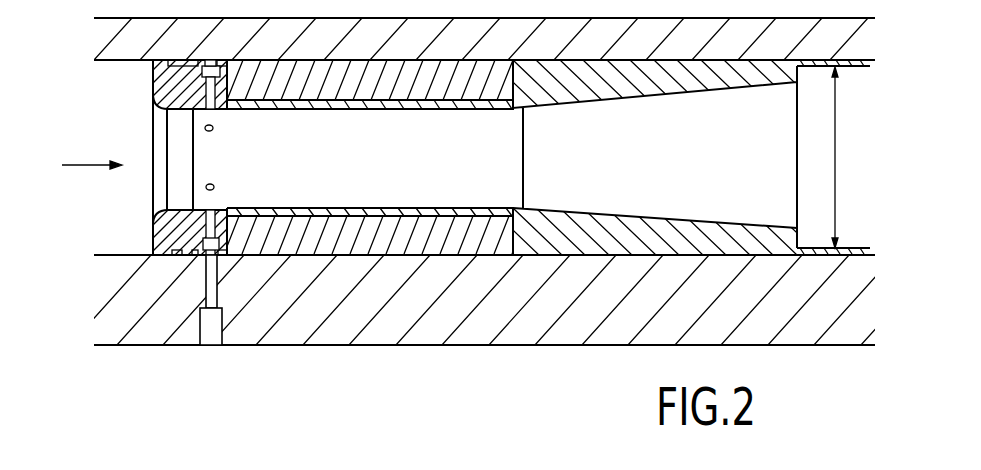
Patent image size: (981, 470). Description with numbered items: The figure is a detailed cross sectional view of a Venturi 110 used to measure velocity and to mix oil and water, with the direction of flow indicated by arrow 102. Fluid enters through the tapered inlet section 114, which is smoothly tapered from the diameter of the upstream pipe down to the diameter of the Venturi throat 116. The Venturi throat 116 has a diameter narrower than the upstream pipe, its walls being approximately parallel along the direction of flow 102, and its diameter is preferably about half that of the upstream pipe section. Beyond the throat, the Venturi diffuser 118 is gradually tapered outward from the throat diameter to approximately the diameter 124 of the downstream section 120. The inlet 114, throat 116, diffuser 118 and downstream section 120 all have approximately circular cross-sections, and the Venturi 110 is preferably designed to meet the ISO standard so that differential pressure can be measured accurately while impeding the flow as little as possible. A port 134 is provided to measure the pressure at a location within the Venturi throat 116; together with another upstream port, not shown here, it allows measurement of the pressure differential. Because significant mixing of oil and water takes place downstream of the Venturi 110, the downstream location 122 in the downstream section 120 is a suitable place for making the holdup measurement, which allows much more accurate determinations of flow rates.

The arrow indicating direction of flow 102 is at (87, 149).
The Venturi 110 is at (437, 367).
The tapered inlet section 114 is at (157, 212).
The Venturi throat 116 is at (457, 203).
The Venturi diffuser 118 is at (698, 220).
The downstream pipe section 120 is at (815, 72).
The downstream location 122 is at (128, 66).
The diameter of downstream section 124 is at (860, 157).
The port 134 is at (217, 280).